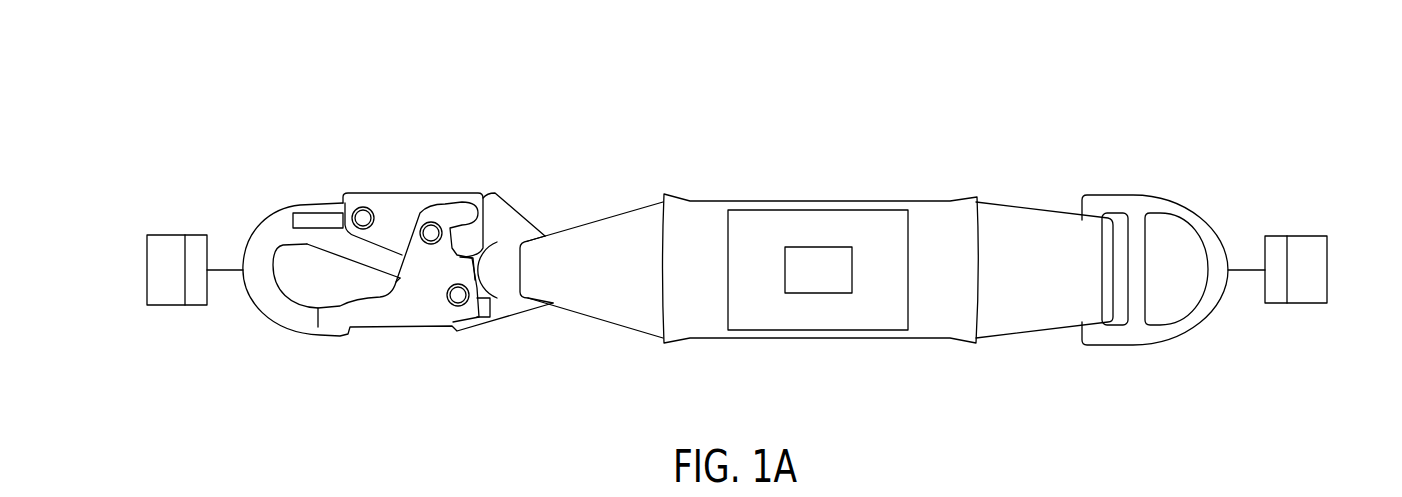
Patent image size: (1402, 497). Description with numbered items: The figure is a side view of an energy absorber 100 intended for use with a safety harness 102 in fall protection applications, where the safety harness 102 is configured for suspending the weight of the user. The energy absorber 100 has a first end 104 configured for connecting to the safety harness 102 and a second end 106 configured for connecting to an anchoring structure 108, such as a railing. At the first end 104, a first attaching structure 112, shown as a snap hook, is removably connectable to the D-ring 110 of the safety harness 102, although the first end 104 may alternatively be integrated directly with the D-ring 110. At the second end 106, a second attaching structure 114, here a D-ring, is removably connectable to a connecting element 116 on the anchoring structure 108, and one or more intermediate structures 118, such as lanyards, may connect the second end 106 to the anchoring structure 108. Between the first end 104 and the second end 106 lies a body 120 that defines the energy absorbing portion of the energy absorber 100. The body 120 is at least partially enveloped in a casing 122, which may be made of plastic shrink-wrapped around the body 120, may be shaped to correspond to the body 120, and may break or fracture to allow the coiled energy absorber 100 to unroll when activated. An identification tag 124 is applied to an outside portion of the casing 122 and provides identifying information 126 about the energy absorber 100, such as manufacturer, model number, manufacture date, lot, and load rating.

The energy absorber 100 is at (924, 106).
The safety harness 102 is at (158, 226).
The first end 104 is at (510, 174).
The second end 106 is at (1170, 180).
The anchoring structure 108 is at (1313, 224).
The D-ring 110 is at (193, 303).
The first attaching structure 112 is at (384, 197).
The second attaching structure 114 is at (1163, 333).
The connecting element 116 is at (1278, 298).
The intermediate structure 118 is at (1243, 273).
The body 120 is at (947, 225).
The casing 122 is at (680, 342).
The identification tag 124 is at (728, 234).
The identifying information 126 is at (818, 247).